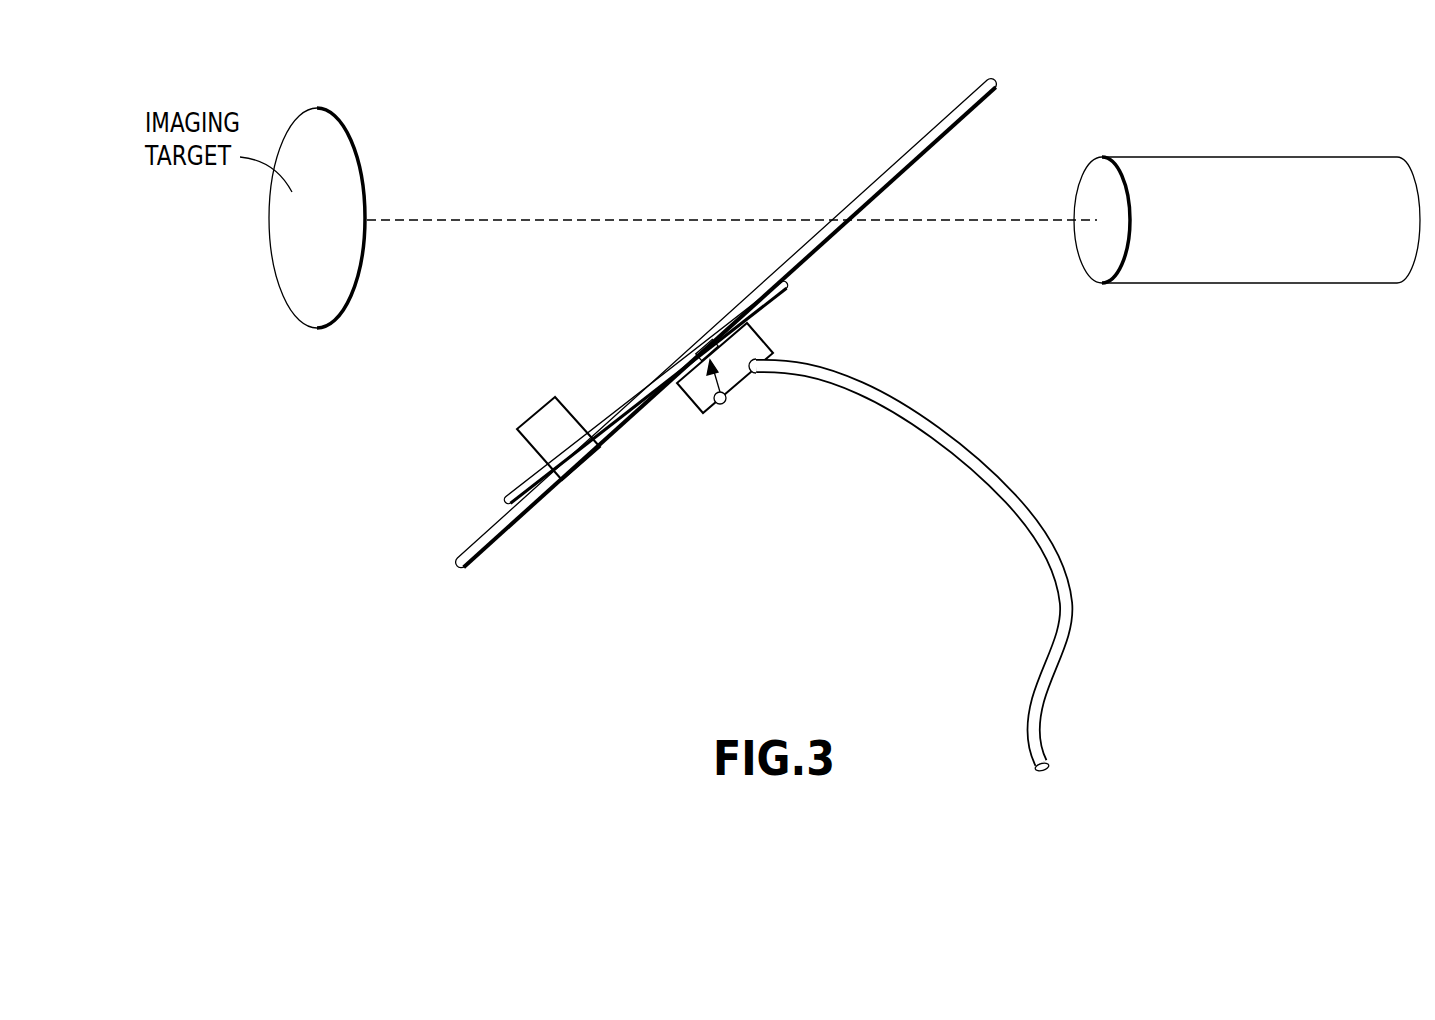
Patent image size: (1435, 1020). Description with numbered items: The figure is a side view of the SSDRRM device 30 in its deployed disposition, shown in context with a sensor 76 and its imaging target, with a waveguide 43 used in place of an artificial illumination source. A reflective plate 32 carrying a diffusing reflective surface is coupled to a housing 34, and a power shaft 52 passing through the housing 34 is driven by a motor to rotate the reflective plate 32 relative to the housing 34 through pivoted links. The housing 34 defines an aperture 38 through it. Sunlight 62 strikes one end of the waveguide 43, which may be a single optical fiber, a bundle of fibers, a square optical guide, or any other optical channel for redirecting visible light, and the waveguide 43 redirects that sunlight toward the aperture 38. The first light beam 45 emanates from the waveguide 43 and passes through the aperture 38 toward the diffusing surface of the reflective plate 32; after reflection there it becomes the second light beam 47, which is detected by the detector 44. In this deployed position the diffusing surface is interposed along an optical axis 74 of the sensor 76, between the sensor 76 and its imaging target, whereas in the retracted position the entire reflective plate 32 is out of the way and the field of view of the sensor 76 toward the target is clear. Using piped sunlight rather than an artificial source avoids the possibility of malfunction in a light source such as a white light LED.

The SSDRRM device 30 is at (659, 98).
The reflective plate 32 is at (908, 147).
The housing 34 is at (640, 428).
The aperture 38 is at (705, 352).
The waveguide 43 is at (1005, 478).
The detector 44 is at (727, 405).
The first light beam 45 is at (715, 362).
The second light beam 47 is at (708, 375).
The power shaft 52 is at (556, 410).
The sunlight 62 is at (1043, 778).
The optical axis 74 is at (447, 218).
The sensor 76 is at (1257, 157).